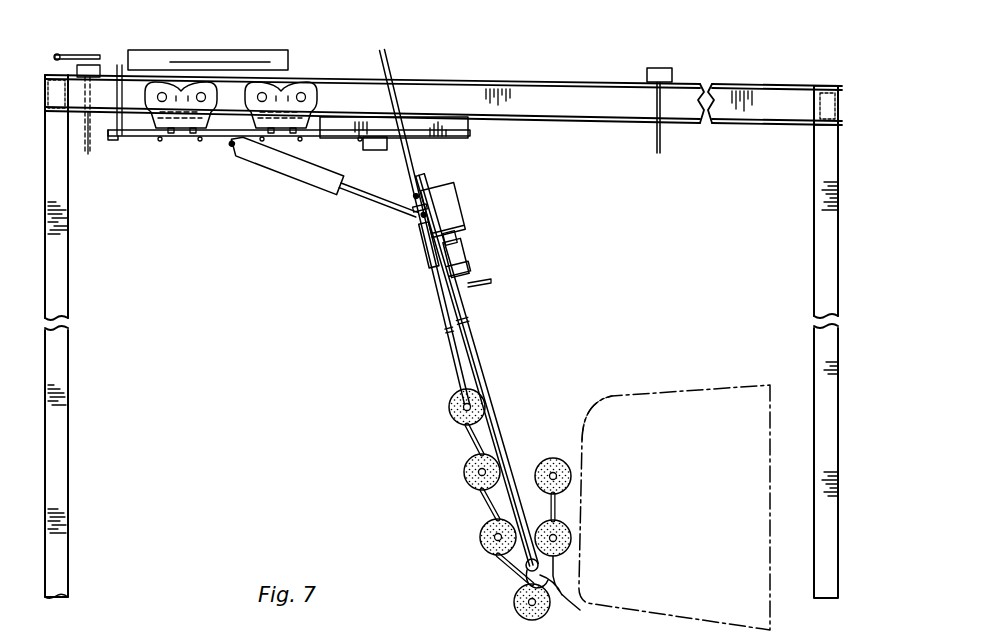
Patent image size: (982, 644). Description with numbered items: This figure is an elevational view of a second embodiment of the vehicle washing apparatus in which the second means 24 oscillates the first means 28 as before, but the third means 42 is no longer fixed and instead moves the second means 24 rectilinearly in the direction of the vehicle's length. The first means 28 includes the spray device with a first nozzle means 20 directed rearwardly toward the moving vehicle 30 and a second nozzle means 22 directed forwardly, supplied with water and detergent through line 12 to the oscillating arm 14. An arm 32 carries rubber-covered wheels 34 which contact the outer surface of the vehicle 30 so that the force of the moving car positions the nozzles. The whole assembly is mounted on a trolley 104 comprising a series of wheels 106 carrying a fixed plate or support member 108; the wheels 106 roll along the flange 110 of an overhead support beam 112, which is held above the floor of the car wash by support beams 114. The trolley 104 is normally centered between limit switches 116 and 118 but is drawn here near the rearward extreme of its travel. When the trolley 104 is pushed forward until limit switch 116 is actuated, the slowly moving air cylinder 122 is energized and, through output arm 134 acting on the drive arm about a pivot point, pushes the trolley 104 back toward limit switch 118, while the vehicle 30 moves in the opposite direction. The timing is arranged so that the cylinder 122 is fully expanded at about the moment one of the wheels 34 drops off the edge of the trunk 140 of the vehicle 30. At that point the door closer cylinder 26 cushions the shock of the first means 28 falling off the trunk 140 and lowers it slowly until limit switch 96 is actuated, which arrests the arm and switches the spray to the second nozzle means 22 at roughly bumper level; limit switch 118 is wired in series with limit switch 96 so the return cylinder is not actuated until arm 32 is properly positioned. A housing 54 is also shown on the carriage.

The line 12 is at (491, 284).
The oscillating arm 14 is at (480, 345).
The first nozzle means 20 is at (559, 594).
The second nozzle means 22 is at (539, 563).
The second means 24 is at (485, 224).
The door closer cylinder 26 is at (252, 168).
The first means 28 is at (527, 430).
The vehicle 30 is at (688, 393).
The arm 32 is at (445, 358).
The wheels 34 is at (466, 462).
The third means 42 is at (327, 92).
The housing 54 is at (458, 206).
The limit switch 96 is at (380, 152).
The trolley 104 is at (183, 142).
The wheels 106 is at (198, 81).
The support member 108 is at (140, 137).
The flange 110 is at (607, 115).
The overhead support beam 112 is at (744, 86).
The support beams 114 is at (67, 388).
The limit switch 116 is at (660, 68).
The limit switch 118 is at (88, 66).
The air cylinder 122 is at (246, 52).
The output arm 134 is at (82, 58).
The trunk 140 is at (582, 435).